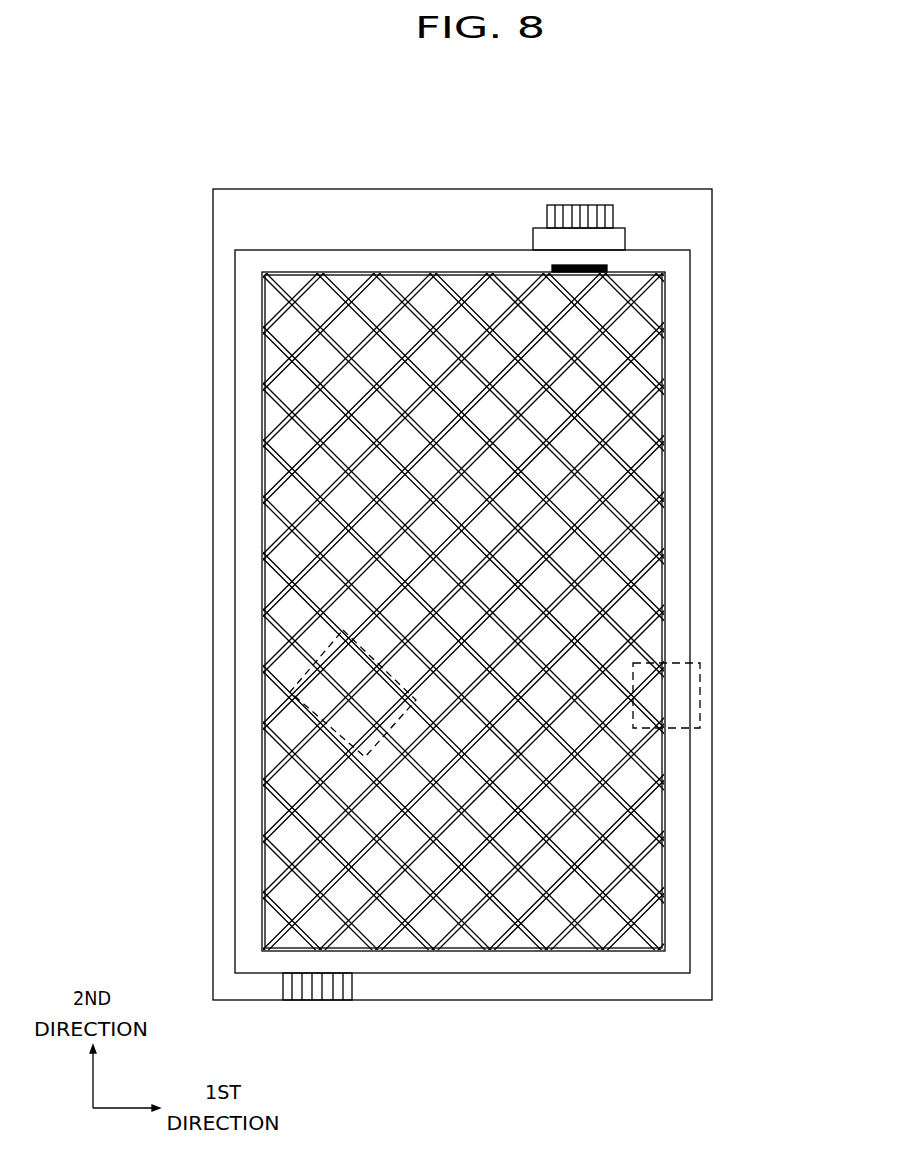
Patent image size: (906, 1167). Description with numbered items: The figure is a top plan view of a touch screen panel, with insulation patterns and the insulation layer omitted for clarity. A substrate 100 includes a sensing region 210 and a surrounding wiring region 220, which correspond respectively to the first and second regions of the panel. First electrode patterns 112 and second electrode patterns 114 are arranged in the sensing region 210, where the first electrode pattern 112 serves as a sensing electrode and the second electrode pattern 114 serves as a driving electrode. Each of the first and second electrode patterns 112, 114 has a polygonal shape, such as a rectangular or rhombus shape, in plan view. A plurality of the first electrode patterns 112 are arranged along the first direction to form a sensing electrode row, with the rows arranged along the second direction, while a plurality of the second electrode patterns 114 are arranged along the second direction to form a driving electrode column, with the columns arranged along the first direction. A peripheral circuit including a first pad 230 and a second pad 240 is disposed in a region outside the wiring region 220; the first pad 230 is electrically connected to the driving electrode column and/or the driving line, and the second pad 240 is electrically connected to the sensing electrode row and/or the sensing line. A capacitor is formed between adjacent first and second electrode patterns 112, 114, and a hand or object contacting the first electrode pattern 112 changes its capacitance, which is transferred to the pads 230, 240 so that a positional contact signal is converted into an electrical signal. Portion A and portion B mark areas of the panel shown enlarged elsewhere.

The substrate 100 is at (713, 330).
The first electrode pattern 112 is at (280, 272).
The second electrode pattern 114 is at (313, 272).
The sensing region 210 is at (413, 267).
The wiring region 220 is at (490, 250).
The first pad 230 is at (578, 205).
The second pad 240 is at (283, 990).
The portion A is at (285, 695).
The portion B is at (700, 685).